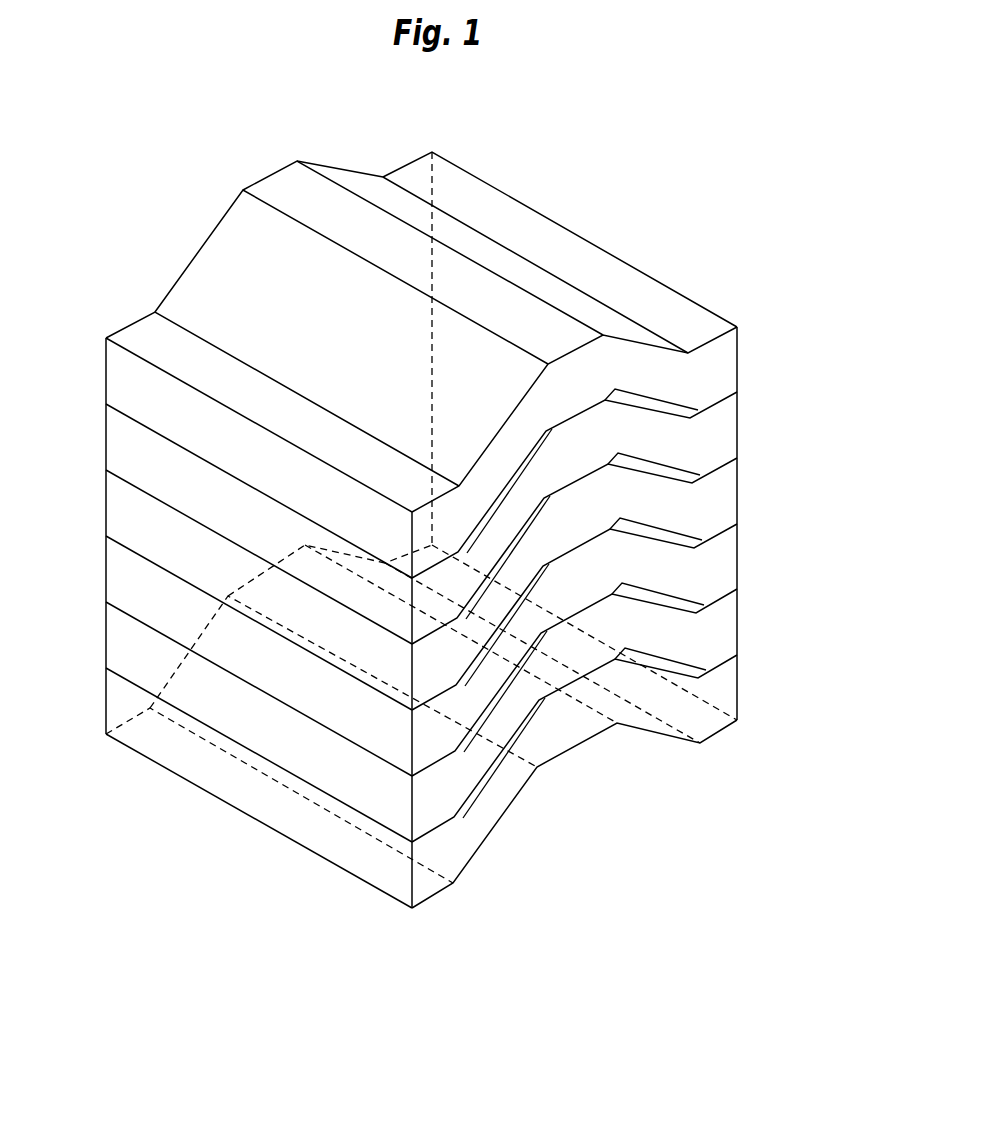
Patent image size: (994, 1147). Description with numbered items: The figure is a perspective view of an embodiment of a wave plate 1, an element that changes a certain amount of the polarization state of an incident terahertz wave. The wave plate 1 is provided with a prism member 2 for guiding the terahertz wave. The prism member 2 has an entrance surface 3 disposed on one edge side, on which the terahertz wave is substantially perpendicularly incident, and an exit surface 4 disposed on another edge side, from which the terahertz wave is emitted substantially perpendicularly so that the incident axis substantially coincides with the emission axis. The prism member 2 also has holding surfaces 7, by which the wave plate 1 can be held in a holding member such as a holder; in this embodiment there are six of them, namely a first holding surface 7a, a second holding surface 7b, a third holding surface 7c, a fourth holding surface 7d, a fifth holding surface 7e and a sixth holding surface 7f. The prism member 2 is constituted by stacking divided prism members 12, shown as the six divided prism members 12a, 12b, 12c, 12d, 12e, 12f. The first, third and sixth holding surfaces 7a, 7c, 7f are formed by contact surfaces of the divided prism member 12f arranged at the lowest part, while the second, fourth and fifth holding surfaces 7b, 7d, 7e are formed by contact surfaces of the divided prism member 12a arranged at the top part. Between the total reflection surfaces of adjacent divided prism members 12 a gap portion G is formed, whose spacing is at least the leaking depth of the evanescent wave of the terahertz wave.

The wave plate 1 is at (553, 123).
The prism member 2 is at (862, 339).
The entrance surface 3 is at (193, 563).
The exit surface 4 is at (628, 287).
The holding surface 7 is at (413, 541).
The first holding surface 7a is at (387, 882).
The second holding surface 7b is at (143, 337).
The third holding surface 7c is at (553, 723).
The fourth holding surface 7d is at (287, 180).
The fifth holding surface 7e is at (663, 703).
The sixth holding surface 7f is at (573, 250).
The divided prism member 12 is at (633, 617).
The divided prism member 12a is at (722, 367).
The divided prism member 12b is at (722, 436).
The divided prism member 12c is at (722, 502).
The divided prism member 12d is at (722, 567).
The divided prism member 12e is at (722, 633).
The divided prism member 12f is at (722, 686).
The gap portion G is at (512, 532).